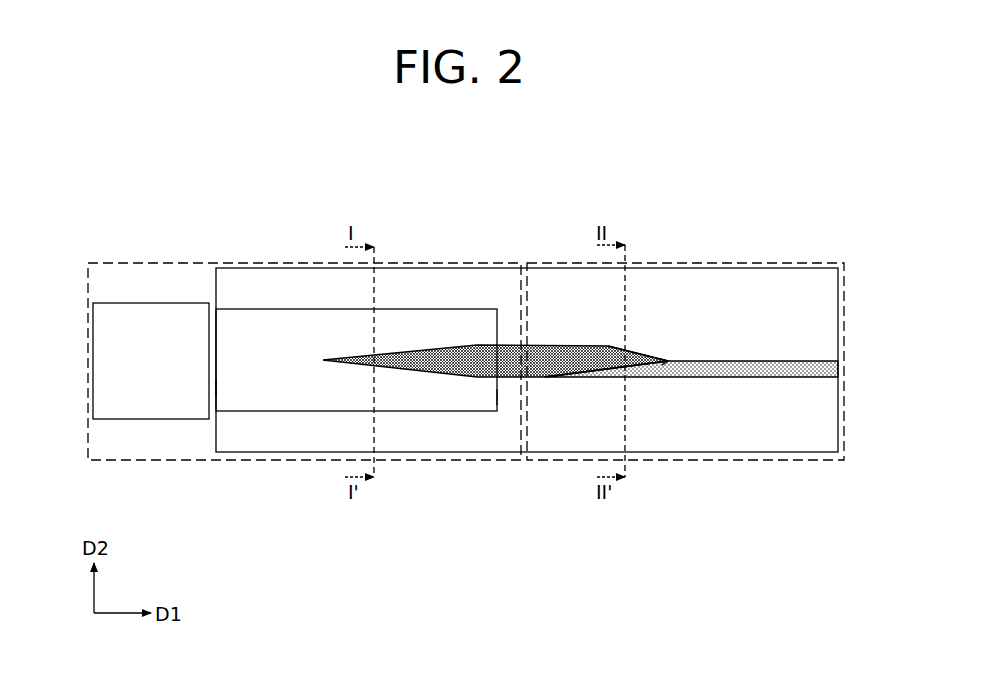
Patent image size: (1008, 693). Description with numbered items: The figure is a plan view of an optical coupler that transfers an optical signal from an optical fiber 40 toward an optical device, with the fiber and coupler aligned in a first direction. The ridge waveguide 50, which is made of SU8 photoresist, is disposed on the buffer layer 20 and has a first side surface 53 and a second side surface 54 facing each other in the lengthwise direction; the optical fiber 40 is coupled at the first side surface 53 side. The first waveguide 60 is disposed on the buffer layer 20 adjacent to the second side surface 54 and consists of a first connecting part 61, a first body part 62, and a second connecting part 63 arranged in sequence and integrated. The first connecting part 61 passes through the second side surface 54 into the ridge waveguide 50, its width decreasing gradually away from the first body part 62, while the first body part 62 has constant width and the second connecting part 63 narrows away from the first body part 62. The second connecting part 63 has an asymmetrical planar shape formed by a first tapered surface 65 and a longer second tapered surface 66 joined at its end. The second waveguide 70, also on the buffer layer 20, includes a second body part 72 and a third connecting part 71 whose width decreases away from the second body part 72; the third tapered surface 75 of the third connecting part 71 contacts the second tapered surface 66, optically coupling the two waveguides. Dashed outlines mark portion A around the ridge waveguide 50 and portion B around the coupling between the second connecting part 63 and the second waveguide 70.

The buffer layer 20 is at (796, 288).
The optical fiber 40 is at (147, 318).
The ridge waveguide 50 is at (265, 328).
The first side surface 53 is at (214, 388).
The second side surface 54 is at (498, 396).
The first waveguide 60 is at (495, 270).
The first connecting part 61 is at (438, 360).
The first body part 62 is at (486, 352).
The second connecting part 63 is at (557, 355).
The first tapered surface 65 is at (642, 350).
The second tapered surface 66 is at (657, 365).
The second waveguide 70 is at (691, 461).
The third connecting part 71 is at (652, 380).
The second body part 72 is at (727, 378).
The third tapered surface 75 is at (599, 367).
The portion A is at (172, 460).
The portion B is at (777, 460).